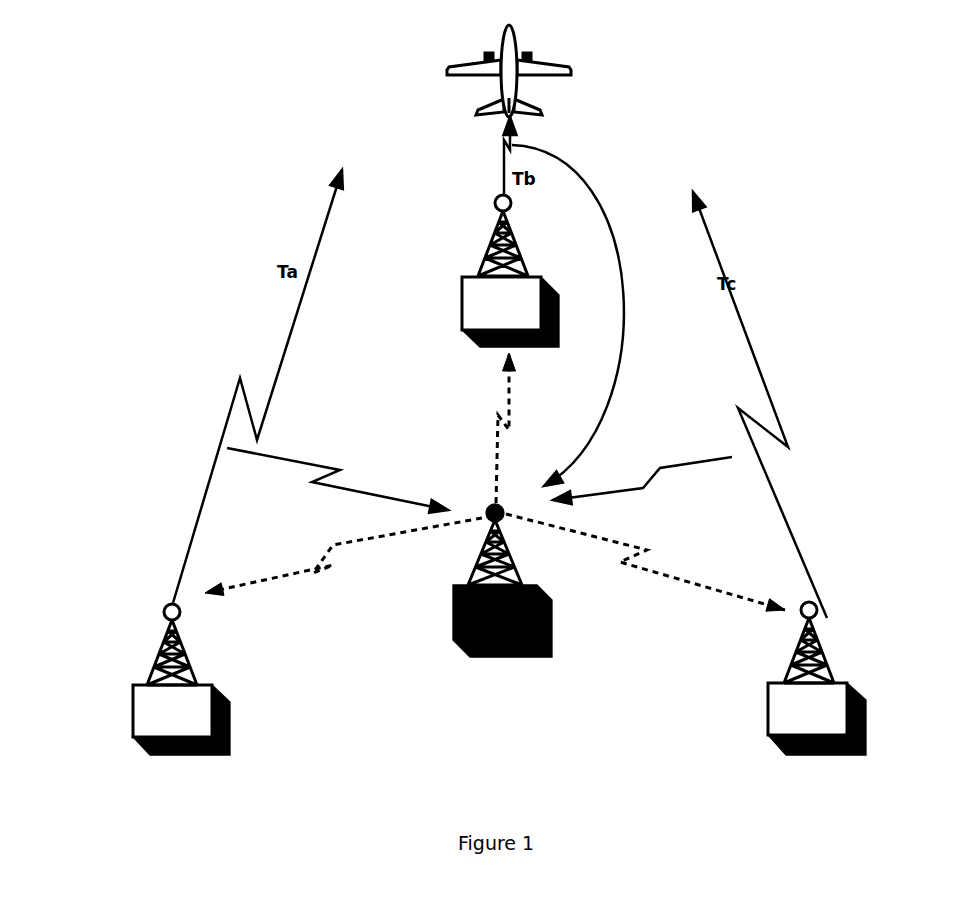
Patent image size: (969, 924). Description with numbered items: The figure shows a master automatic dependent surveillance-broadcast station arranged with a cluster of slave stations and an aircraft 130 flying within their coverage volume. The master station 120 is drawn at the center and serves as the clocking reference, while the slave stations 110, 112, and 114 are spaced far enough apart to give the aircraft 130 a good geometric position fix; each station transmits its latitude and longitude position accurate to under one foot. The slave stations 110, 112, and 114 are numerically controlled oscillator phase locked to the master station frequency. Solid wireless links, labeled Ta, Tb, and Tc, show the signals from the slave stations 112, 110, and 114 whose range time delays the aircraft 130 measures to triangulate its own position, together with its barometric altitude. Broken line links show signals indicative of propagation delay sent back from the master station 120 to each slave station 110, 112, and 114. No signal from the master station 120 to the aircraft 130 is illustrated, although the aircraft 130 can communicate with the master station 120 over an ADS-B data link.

The slave station 110 is at (483, 291).
The slave station 112 is at (153, 700).
The slave station 114 is at (790, 700).
The master station 120 is at (552, 610).
The aircraft 130 is at (552, 62).